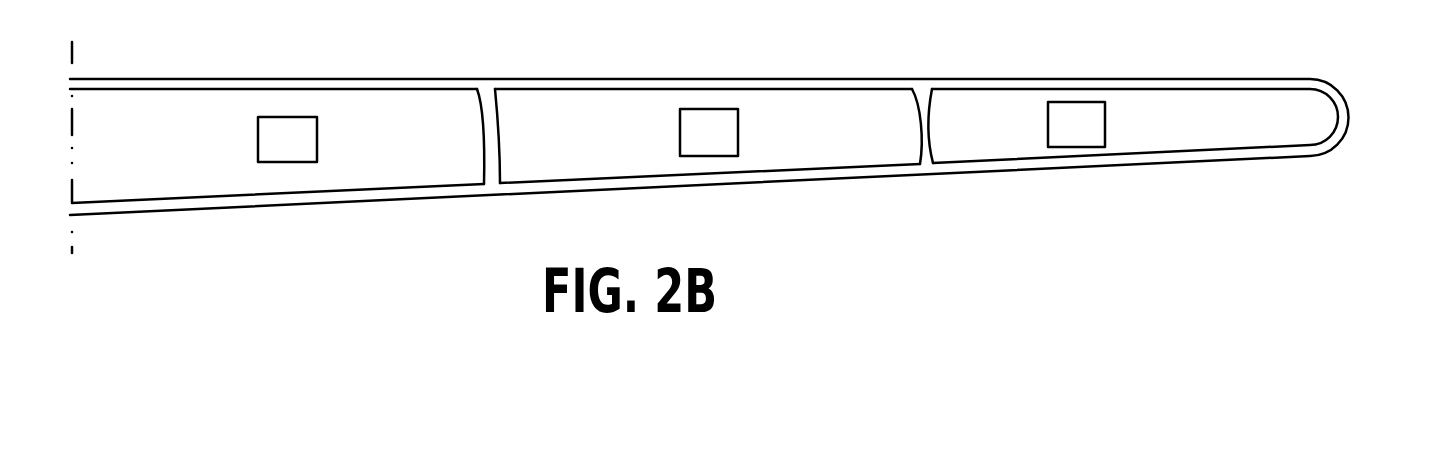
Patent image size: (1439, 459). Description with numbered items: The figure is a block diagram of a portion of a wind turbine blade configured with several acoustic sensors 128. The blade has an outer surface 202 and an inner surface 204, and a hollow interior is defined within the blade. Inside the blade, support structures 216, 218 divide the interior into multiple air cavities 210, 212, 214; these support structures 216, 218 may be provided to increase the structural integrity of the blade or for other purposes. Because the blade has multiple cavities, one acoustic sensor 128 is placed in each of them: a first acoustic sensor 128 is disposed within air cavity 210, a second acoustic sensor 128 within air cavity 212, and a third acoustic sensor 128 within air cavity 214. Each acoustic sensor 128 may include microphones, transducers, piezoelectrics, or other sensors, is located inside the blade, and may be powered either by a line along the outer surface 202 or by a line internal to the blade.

The acoustic sensor 128 is at (681, 132).
The outer surface 202 is at (595, 79).
The inner surface 204 is at (233, 197).
The air cavity 210 is at (241, 157).
The air cavity 212 is at (667, 139).
The air cavity 214 is at (1262, 112).
The support structure 216 is at (482, 126).
The support structure 218 is at (918, 119).